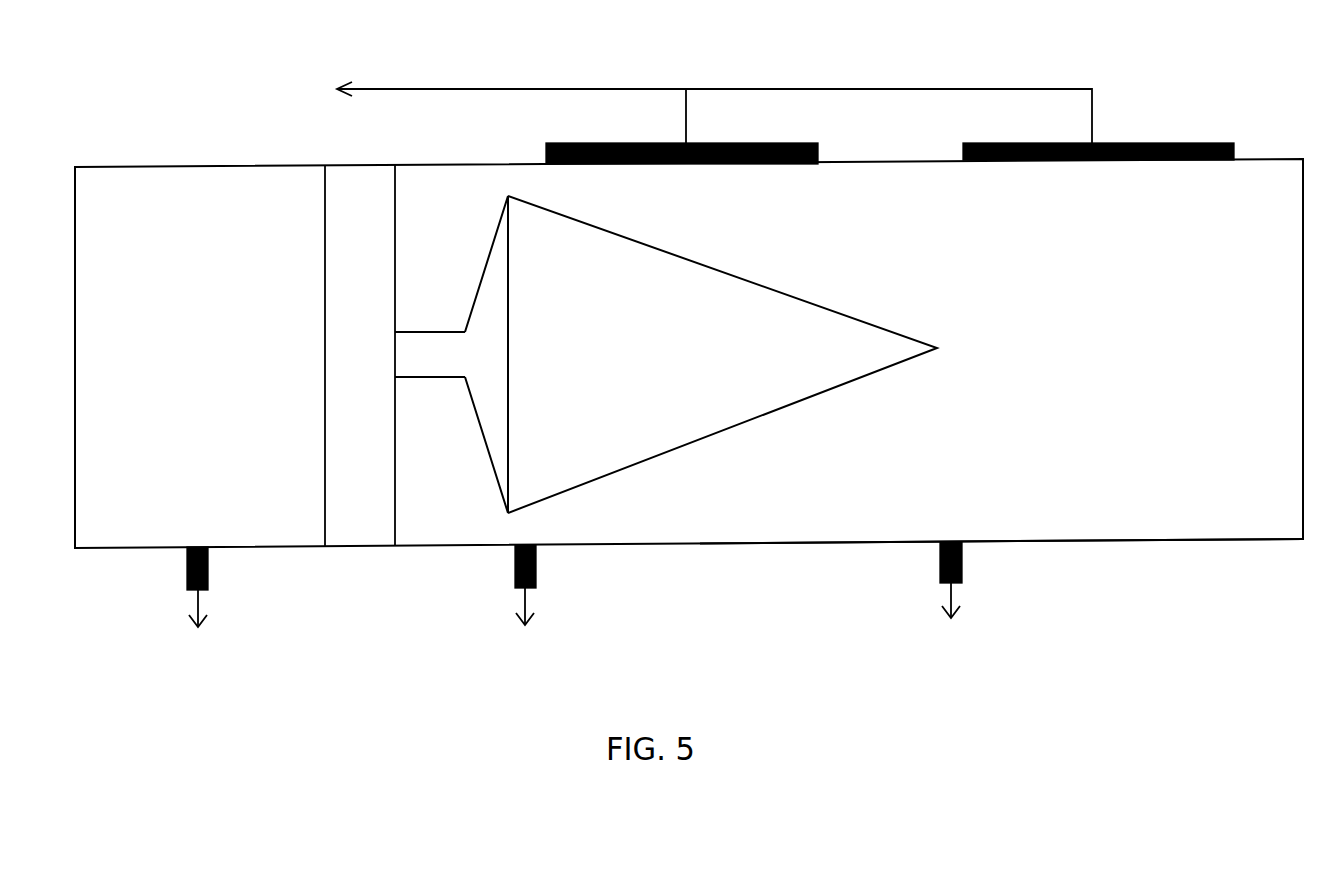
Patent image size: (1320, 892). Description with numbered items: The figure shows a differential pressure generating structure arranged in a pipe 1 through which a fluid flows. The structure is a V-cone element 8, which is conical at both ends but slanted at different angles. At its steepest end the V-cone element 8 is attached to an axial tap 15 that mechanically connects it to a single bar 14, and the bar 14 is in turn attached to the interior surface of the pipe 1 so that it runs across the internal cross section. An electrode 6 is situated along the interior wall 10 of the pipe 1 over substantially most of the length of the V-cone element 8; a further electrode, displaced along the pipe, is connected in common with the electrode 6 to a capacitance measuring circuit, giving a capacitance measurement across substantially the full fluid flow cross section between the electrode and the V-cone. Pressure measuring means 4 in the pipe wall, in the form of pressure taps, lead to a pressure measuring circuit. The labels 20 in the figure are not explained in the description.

The pipe 1 is at (163, 165).
The pressure measuring means 4 is at (187, 570).
The electrode 6 is at (737, 140).
The V-cone element 8 is at (632, 388).
The interior wall 10 is at (1168, 535).
The bar 14 is at (352, 264).
The axial tap 15 is at (425, 347).
The chamber regions 20 is at (800, 263).